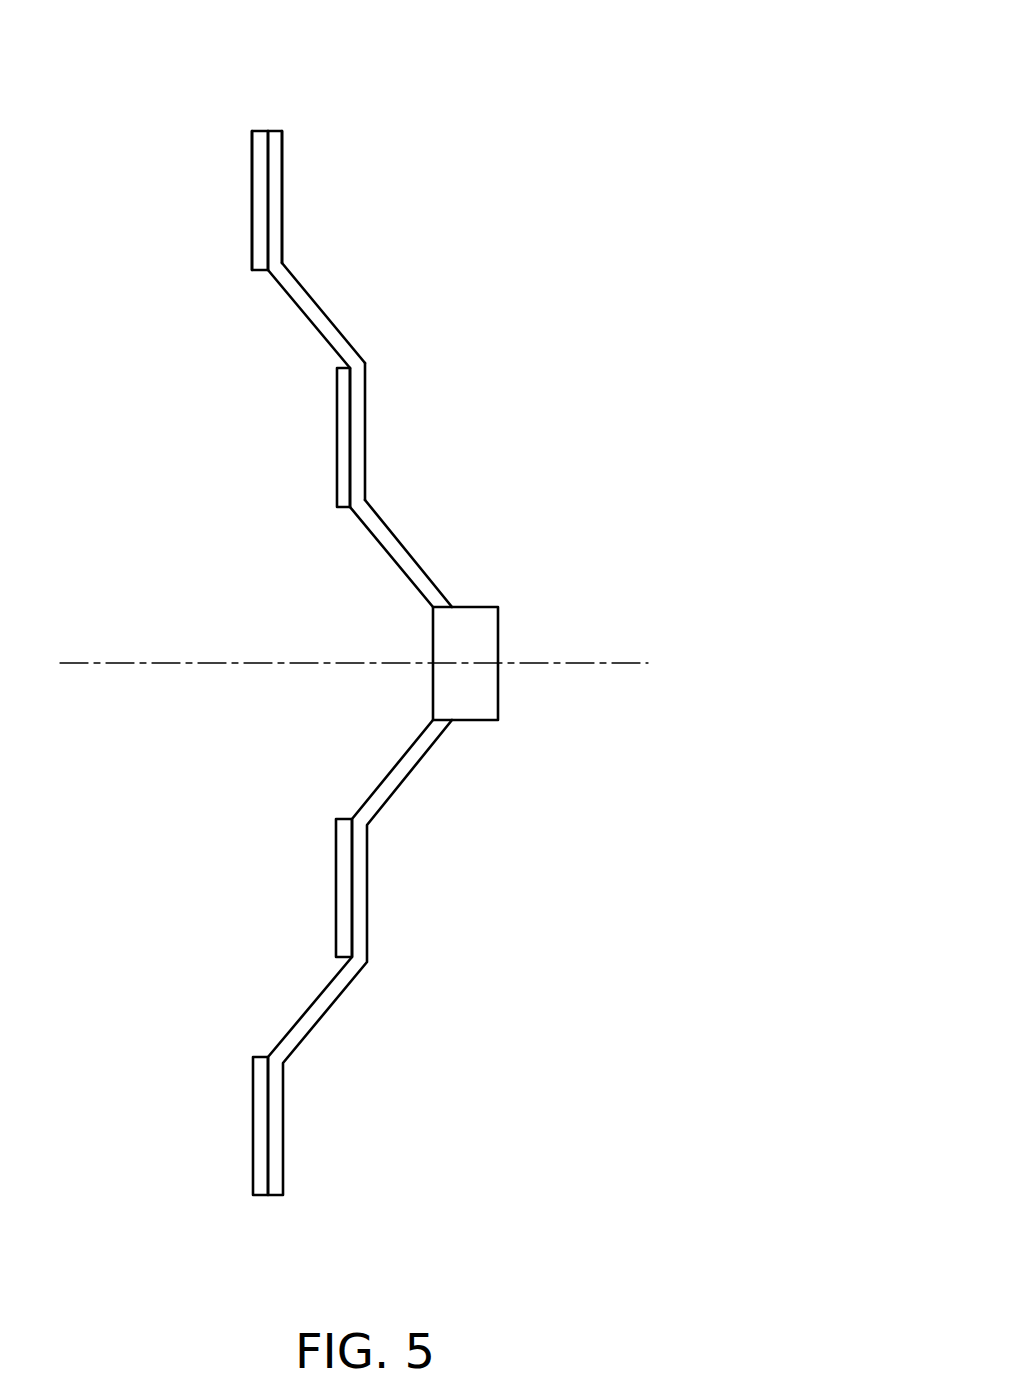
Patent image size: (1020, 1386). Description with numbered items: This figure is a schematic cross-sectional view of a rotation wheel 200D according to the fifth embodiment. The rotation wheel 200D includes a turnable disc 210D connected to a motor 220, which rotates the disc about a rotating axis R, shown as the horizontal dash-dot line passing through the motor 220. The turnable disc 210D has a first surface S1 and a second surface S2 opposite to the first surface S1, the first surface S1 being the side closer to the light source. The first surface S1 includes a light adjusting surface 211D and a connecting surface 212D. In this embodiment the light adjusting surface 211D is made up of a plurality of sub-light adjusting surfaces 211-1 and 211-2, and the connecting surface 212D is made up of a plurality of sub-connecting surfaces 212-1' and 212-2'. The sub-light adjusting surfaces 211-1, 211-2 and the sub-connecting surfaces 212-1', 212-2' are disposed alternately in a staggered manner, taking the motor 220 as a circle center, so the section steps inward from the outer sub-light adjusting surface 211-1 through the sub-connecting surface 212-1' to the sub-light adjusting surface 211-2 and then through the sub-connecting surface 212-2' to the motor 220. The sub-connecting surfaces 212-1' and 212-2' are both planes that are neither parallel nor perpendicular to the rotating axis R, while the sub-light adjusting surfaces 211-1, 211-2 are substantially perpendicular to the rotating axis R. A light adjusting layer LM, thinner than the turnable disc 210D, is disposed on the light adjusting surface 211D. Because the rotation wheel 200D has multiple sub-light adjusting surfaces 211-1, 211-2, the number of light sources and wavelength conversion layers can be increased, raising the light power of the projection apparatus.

The rotation wheel 200D is at (748, 1241).
The turnable disc 210D is at (450, 128).
The light adjusting surface 211D is at (748, 2).
The connecting surface 212D is at (748, 115).
The sub-light adjusting surface 211-1 is at (270, 215).
The sub-light adjusting surface 211-2 is at (354, 432).
The sub-connecting surface 212-1' is at (358, 315).
The sub-connecting surface 212-2' is at (440, 553).
The motor 220 is at (481, 635).
The rotating axis R is at (120, 662).
The first surface S1 is at (265, 157).
The second surface S2 is at (296, 163).
The light adjusting layer LM is at (260, 1165).